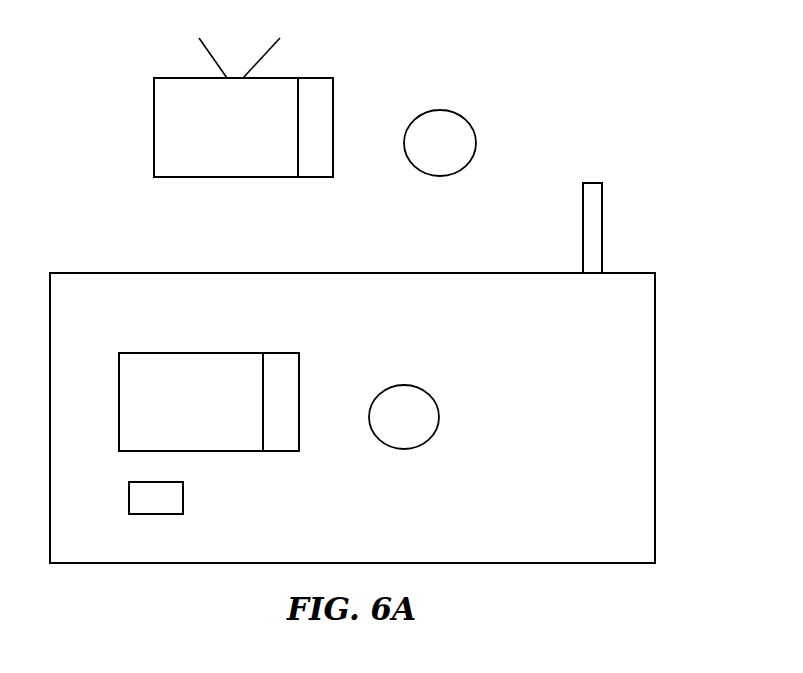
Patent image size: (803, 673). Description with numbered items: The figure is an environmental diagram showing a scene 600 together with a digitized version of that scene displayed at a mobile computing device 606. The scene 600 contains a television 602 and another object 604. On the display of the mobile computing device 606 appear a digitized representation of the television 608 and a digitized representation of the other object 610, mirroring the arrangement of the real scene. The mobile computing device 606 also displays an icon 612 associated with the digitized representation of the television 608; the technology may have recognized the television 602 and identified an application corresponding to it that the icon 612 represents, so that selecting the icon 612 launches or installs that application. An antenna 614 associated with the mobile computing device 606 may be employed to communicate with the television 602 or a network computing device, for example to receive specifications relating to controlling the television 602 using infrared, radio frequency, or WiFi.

The scene 600 is at (602, 95).
The television 602 is at (243, 107).
The other object 604 is at (456, 142).
The mobile computing device 606 is at (352, 408).
The digitized representation of the television 608 is at (209, 393).
The digitized representation of the other object 610 is at (421, 415).
The icon 612 is at (156, 509).
The antenna 614 is at (602, 210).